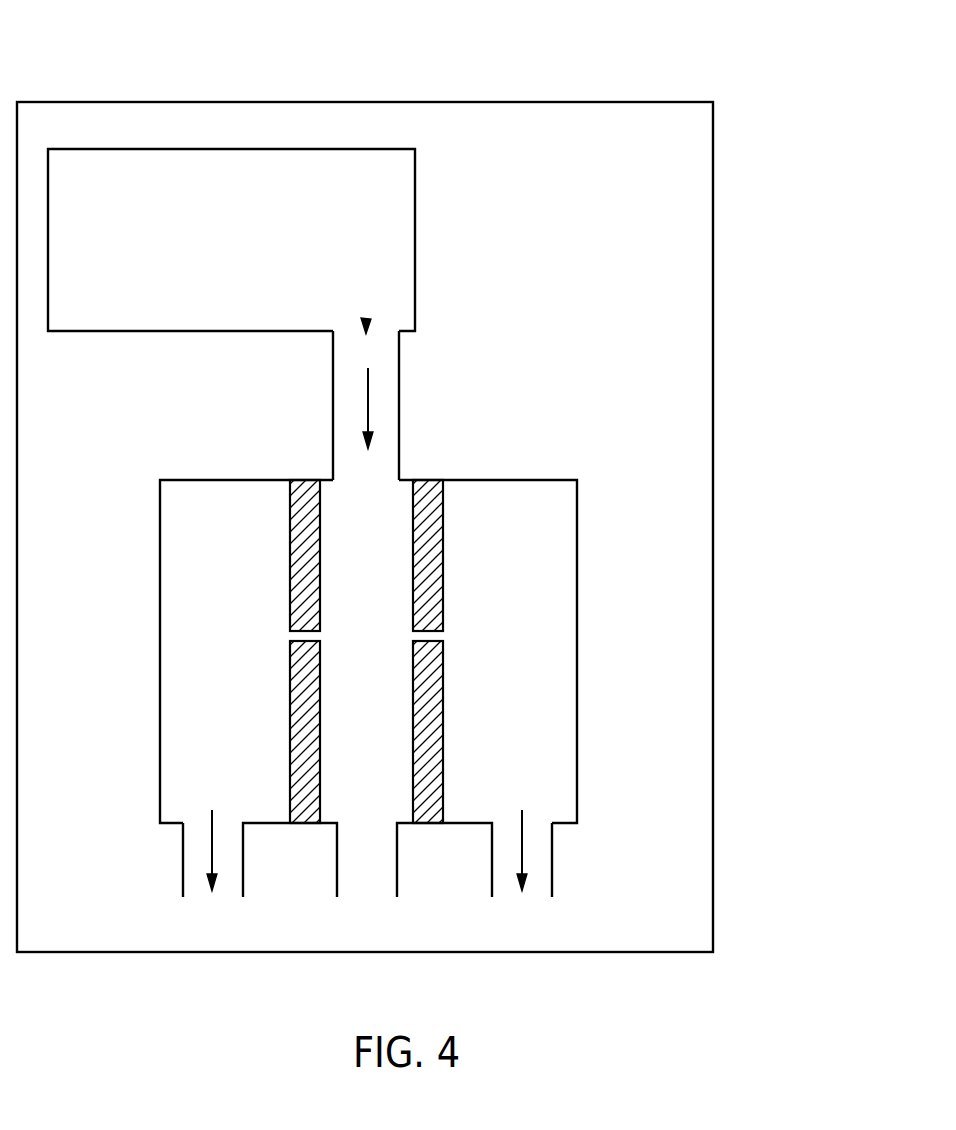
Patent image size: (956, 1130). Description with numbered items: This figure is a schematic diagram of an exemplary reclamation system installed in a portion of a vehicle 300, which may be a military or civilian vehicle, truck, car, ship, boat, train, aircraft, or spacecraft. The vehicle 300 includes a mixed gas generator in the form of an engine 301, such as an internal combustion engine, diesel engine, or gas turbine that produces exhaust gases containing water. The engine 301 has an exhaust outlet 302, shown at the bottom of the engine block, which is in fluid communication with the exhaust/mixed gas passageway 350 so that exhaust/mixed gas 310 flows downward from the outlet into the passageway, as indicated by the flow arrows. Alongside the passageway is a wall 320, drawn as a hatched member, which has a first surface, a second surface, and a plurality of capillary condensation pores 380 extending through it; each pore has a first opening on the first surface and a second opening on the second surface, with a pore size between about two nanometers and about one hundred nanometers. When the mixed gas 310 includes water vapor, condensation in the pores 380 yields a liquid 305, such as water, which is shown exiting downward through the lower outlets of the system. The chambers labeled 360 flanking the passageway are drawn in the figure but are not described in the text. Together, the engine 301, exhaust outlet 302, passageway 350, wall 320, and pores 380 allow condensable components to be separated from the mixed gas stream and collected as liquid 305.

The vehicle 300 is at (653, 142).
The engine 301 is at (115, 148).
The exhaust outlet 302 is at (366, 322).
The exhaust/mixed gas 310 is at (367, 398).
The wall 320 is at (430, 540).
The exhaust/mixed gas passageway 350 is at (348, 530).
The chamber 360 is at (188, 540).
The capillary condensation pores 380 is at (298, 635).
The liquid 305 is at (211, 838).